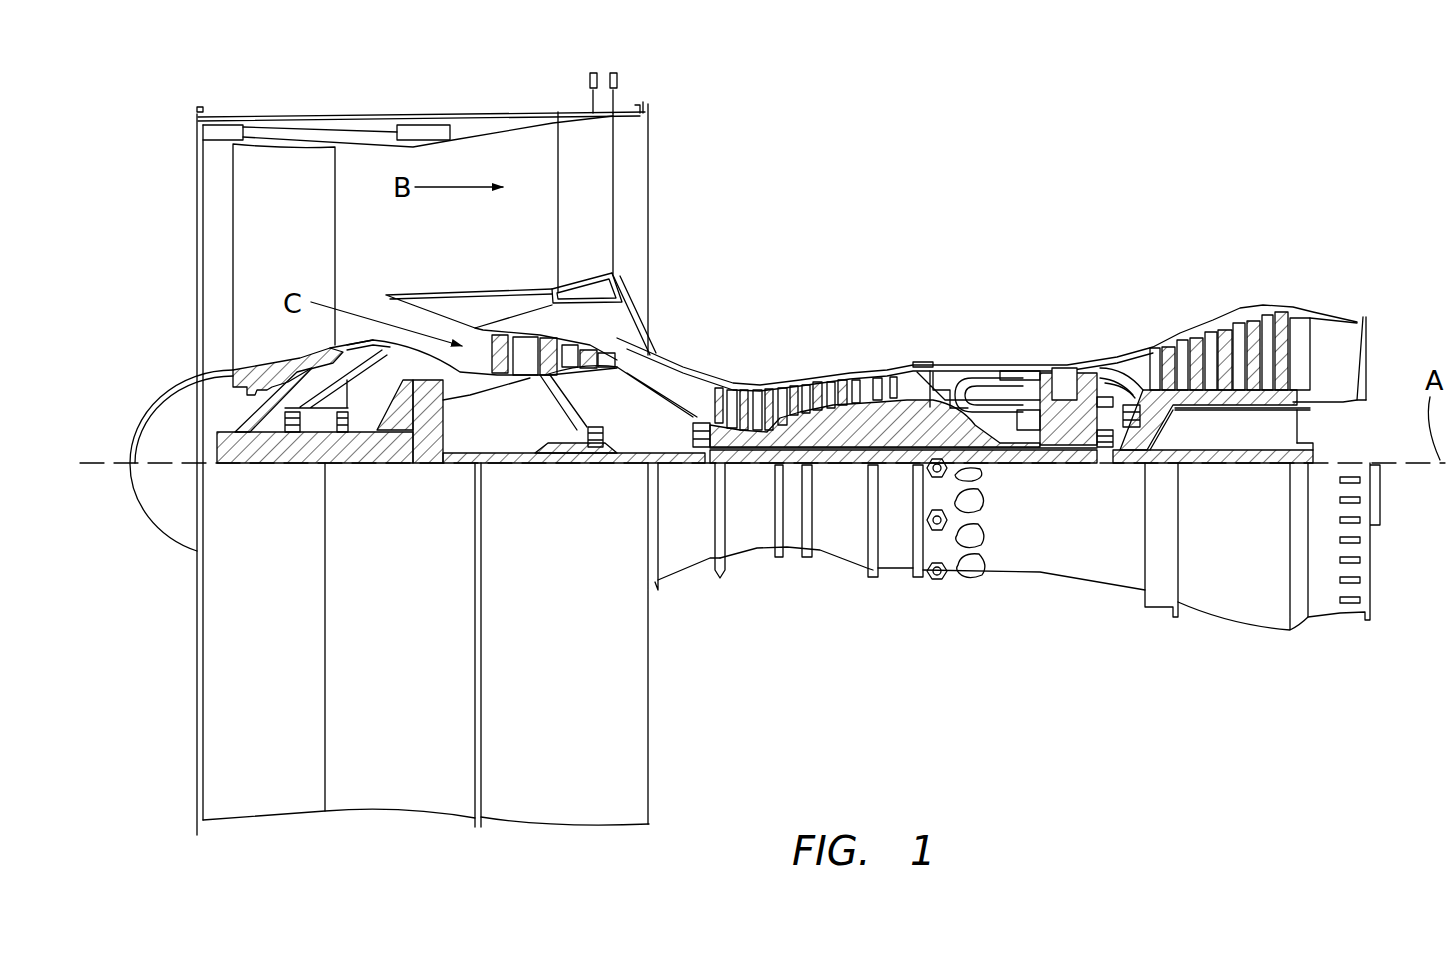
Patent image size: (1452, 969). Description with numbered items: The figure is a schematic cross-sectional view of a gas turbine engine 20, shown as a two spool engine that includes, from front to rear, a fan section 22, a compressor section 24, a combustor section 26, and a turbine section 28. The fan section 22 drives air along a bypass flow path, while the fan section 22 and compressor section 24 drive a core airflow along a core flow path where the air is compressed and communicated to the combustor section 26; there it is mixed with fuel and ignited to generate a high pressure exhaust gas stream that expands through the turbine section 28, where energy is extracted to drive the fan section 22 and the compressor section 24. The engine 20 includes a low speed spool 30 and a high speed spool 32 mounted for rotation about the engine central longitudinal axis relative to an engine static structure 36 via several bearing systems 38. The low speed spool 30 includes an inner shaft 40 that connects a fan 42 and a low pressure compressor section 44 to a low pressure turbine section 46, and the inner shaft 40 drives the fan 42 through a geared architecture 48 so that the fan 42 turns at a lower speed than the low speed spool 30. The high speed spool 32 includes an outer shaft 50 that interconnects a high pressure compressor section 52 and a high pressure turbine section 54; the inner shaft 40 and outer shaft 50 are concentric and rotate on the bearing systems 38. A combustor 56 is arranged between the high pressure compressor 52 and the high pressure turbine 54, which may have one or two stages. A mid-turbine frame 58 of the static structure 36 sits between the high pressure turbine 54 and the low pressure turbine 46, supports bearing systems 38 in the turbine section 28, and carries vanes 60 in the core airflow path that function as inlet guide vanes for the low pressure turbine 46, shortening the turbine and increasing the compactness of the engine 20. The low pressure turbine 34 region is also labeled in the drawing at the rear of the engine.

The gas turbine engine 20 is at (1000, 193).
The fan section 22 is at (335, 104).
The compressor section 24 is at (699, 360).
The combustor section 26 is at (973, 355).
The turbine section 28 is at (1170, 297).
The low speed spool 30 is at (850, 467).
The high speed spool 32 is at (900, 425).
The low pressure turbine 34 is at (1248, 413).
The engine static structure 36 is at (897, 557).
The bearing systems 38 is at (348, 450).
The inner shaft 40 is at (678, 467).
The fan 42 is at (292, 240).
The low pressure compressor section 44 is at (577, 340).
The low pressure turbine section 46 is at (1224, 333).
The geared architecture 48 is at (427, 447).
The outer shaft 50 is at (1010, 462).
The high pressure compressor section 52 is at (823, 385).
The high pressure turbine section 54 is at (1068, 368).
The combustor 56 is at (990, 393).
The mid-turbine frame 58 is at (1120, 357).
The vanes 60 is at (1113, 380).